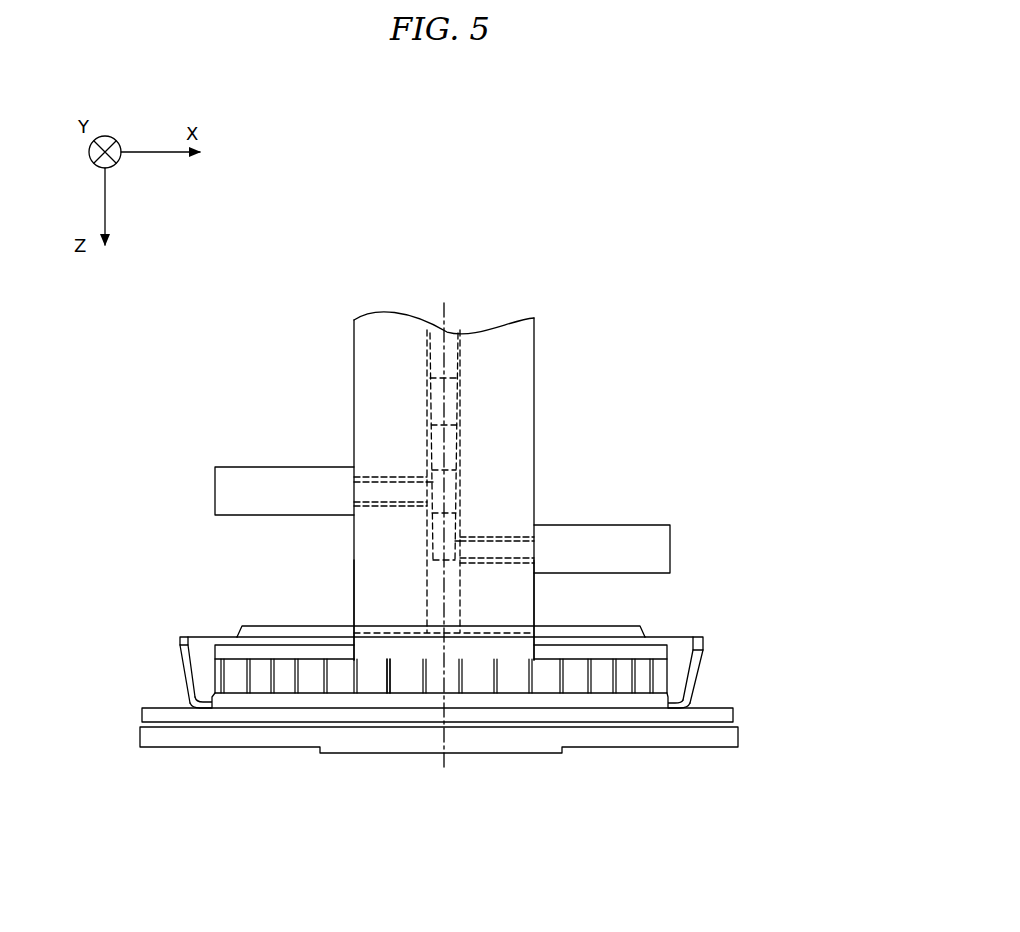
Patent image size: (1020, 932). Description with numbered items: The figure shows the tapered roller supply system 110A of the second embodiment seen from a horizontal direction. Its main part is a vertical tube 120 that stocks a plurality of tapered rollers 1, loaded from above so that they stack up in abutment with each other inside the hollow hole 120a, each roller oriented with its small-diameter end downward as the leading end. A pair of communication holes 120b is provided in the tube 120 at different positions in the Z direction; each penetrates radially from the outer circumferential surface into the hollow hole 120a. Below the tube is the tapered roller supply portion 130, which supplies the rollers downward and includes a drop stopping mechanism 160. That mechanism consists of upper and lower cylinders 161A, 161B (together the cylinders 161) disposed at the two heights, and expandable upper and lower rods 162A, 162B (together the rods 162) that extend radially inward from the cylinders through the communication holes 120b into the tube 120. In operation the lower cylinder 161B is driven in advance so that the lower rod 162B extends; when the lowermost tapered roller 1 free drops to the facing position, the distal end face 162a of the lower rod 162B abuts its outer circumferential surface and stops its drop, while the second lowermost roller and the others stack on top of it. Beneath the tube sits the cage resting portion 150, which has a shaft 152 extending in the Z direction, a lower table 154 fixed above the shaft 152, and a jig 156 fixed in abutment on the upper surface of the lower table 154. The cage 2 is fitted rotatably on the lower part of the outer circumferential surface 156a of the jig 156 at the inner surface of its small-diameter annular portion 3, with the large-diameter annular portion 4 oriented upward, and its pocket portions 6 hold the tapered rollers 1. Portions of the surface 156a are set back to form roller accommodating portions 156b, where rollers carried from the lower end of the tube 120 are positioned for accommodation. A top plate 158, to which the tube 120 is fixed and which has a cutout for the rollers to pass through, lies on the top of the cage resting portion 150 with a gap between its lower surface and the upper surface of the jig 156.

The tapered roller 1 is at (452, 330).
The cage 2 is at (710, 632).
The small-diameter annular portion 3 is at (190, 697).
The large-diameter annular portion 4 is at (180, 637).
The pocket portion 6 is at (695, 670).
The tapered roller supply system 110A is at (630, 292).
The tube 120 is at (360, 333).
The hollow hole 120a is at (434, 328).
The communication hole 120b is at (357, 500).
The tapered roller supply portion 130 is at (348, 572).
The cage resting portion 150 is at (121, 708).
The shaft 152 is at (718, 742).
The lower table 154 is at (740, 717).
The jig 156 is at (674, 666).
The outer circumferential surface 156a is at (693, 705).
The roller accommodating portion 156b is at (404, 682).
The top plate 158 is at (655, 653).
The drop stopping mechanism 160 is at (211, 491).
The cylinder 161 is at (470, 492).
The upper cylinder 161A is at (235, 483).
The lower cylinder 161B is at (657, 540).
The rod 162 is at (478, 462).
The upper rod 162A is at (392, 481).
The lower rod 162B is at (518, 552).
The distal end face 162a is at (462, 492).